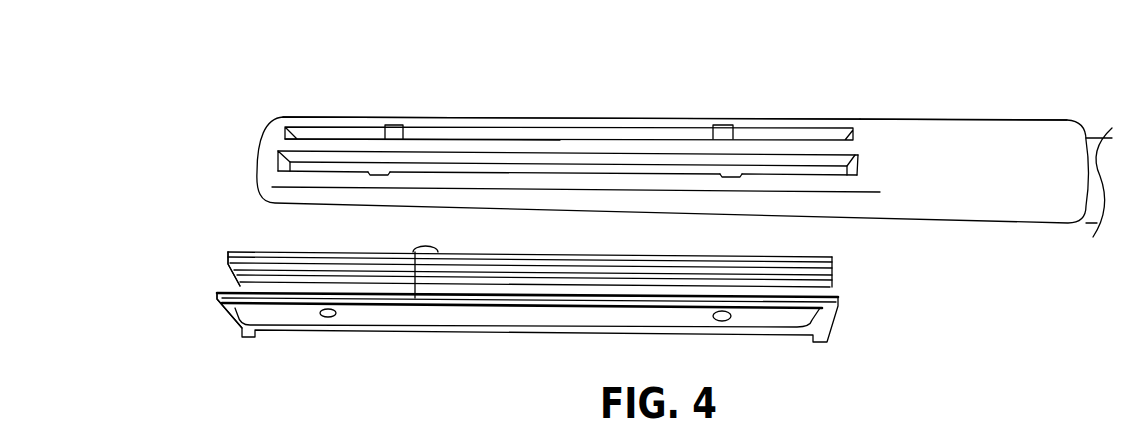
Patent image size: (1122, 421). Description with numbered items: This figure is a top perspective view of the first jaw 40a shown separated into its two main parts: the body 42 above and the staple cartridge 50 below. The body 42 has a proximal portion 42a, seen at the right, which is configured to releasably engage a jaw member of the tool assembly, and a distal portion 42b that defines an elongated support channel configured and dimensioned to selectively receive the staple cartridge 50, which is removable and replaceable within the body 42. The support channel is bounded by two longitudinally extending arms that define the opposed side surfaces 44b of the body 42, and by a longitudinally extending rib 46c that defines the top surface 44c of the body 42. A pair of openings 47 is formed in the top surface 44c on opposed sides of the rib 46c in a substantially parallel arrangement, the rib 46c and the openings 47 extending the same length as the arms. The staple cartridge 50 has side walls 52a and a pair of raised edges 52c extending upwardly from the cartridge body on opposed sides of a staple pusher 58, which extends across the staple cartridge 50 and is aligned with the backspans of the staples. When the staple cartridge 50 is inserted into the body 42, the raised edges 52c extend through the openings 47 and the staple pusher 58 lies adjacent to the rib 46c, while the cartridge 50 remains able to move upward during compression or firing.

The first jaw 40a is at (564, 103).
The body 42 is at (448, 107).
The proximal portion 42a is at (928, 150).
The distal portion 42b is at (287, 122).
The side surfaces 44b is at (675, 117).
The top surface 44c is at (292, 143).
The longitudinally extending rib 46c is at (493, 147).
The openings 47 is at (340, 168).
The staple cartridge 50 is at (841, 360).
The side walls 52a is at (432, 308).
The raised edges 52c is at (290, 297).
The staple pusher 58 is at (650, 290).